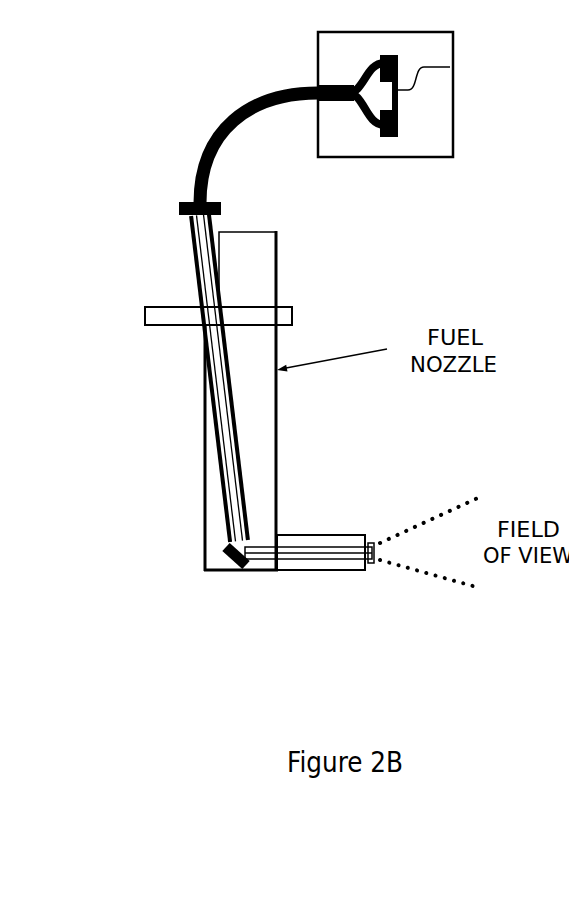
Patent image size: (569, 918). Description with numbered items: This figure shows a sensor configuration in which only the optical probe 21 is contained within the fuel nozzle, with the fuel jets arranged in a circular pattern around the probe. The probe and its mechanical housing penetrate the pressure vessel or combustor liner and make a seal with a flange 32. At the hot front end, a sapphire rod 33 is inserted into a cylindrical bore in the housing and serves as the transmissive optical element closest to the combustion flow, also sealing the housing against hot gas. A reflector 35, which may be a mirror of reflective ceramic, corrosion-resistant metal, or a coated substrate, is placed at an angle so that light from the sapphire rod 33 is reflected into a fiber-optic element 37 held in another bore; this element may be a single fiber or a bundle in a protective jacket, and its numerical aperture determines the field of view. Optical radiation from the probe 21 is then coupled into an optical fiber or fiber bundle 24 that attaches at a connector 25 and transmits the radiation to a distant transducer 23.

The optical probe 21 is at (183, 565).
The transducer 23 is at (306, 42).
The optical fiber or fiber bundle 24 is at (175, 167).
The connector 25 is at (321, 204).
The flange 32 is at (304, 316).
The sapphire rod 33 is at (314, 571).
The reflector 35 is at (212, 572).
The fiber-optic element 37 is at (247, 426).